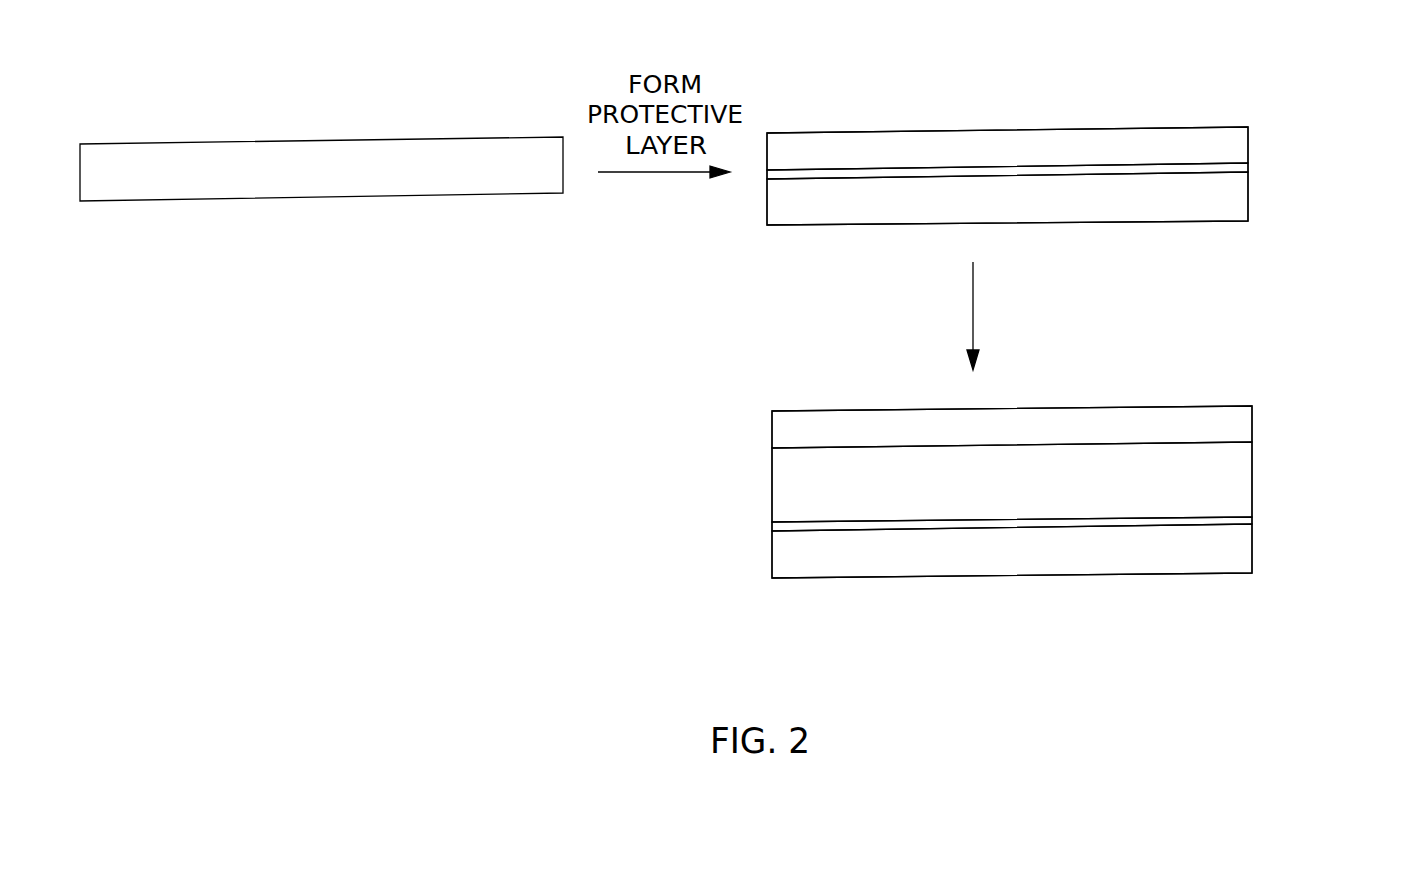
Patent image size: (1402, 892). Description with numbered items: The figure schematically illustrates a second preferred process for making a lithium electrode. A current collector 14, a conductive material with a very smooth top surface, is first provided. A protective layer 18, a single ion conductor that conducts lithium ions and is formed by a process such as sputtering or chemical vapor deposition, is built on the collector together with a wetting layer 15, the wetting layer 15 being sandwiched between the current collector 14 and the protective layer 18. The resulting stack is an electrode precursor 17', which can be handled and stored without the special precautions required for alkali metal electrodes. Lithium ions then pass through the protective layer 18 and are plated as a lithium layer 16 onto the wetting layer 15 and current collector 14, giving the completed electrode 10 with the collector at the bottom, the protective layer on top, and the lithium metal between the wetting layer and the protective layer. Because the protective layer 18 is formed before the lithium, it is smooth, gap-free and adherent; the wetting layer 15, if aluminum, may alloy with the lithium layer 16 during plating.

The lithium electrode 10 is at (1306, 397).
The current collector 14 is at (322, 198).
The wetting layer 15 is at (1242, 170).
The lithium layer 16 is at (772, 486).
The electrode precursor 17' is at (1037, 134).
The protective layer 18 is at (868, 131).